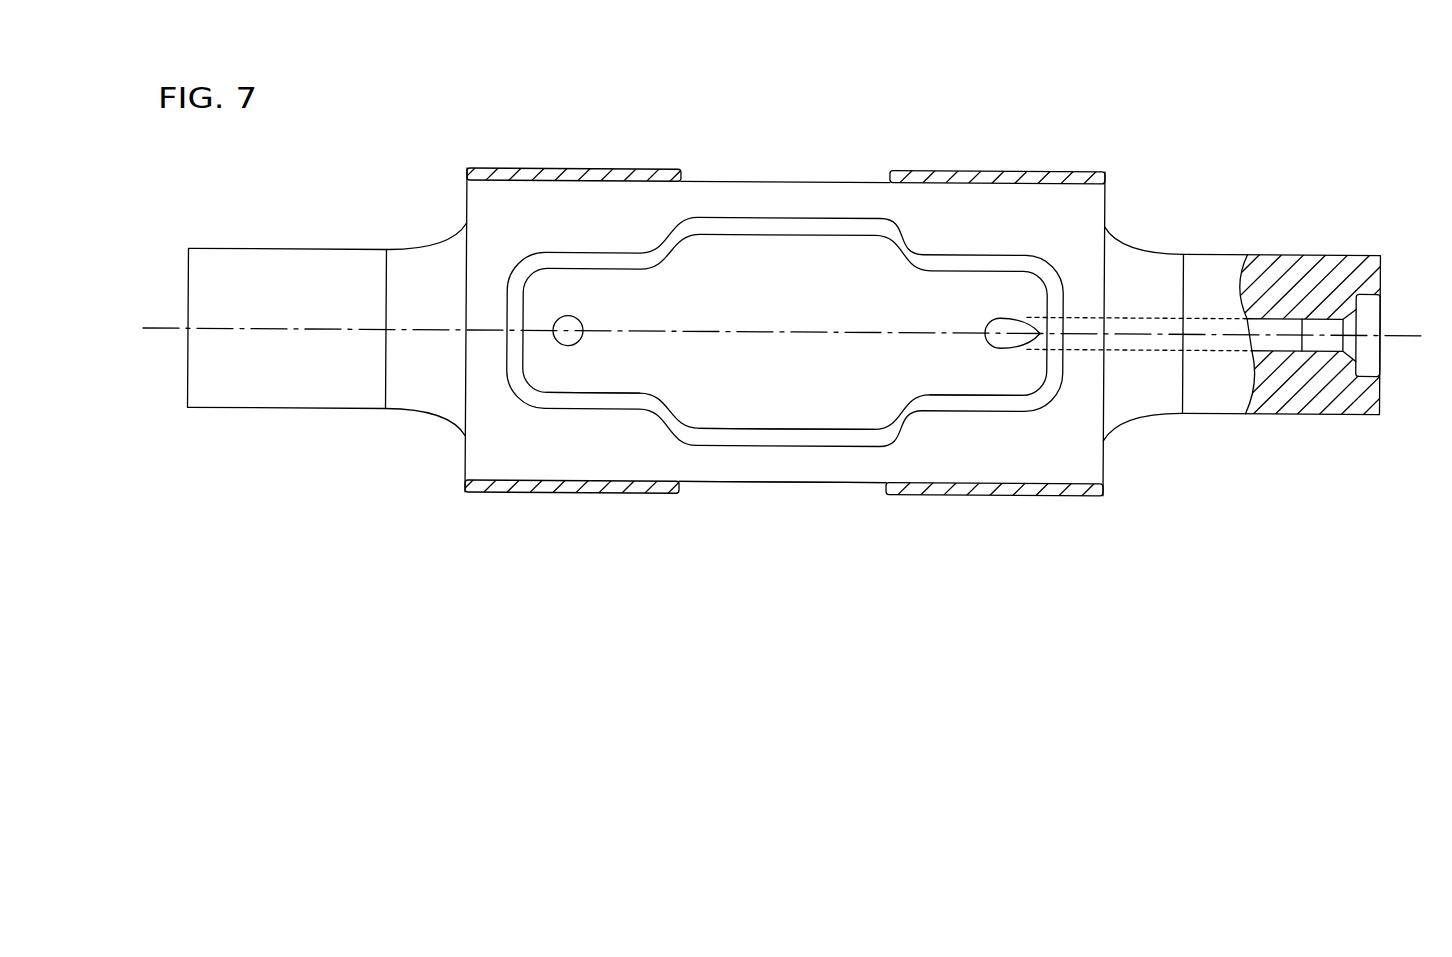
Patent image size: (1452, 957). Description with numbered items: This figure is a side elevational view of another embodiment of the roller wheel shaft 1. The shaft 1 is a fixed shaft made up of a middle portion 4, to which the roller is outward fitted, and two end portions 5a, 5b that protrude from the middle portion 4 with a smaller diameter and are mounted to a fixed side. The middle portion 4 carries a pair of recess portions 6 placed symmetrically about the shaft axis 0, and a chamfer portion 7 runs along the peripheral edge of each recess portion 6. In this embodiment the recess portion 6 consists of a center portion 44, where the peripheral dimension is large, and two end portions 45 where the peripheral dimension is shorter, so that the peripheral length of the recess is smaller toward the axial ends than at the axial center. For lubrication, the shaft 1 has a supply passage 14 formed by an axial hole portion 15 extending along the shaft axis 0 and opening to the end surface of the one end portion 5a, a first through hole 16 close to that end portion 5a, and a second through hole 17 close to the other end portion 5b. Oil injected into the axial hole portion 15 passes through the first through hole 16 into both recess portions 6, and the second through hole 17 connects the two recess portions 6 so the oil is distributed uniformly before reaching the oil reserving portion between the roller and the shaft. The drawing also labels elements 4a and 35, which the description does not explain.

The shaft axis 0 is at (1400, 329).
The roller wheel shaft 1 is at (1140, 184).
The middle portion 4 is at (819, 333).
The bottom wall of body portion 4a is at (829, 461).
The end portion 5a is at (1275, 349).
The end portion 5b is at (296, 396).
The recess portion 6 is at (755, 233).
The chamfer portion 7 is at (1025, 394).
The supply passage 14 is at (1267, 301).
The axial hole portion 15 is at (1287, 322).
The first through hole 16 is at (997, 313).
The second through hole 17 is at (570, 313).
The reinforcing rib 35 is at (972, 167).
The center portion 44 is at (740, 425).
The end portion 45 is at (596, 390).